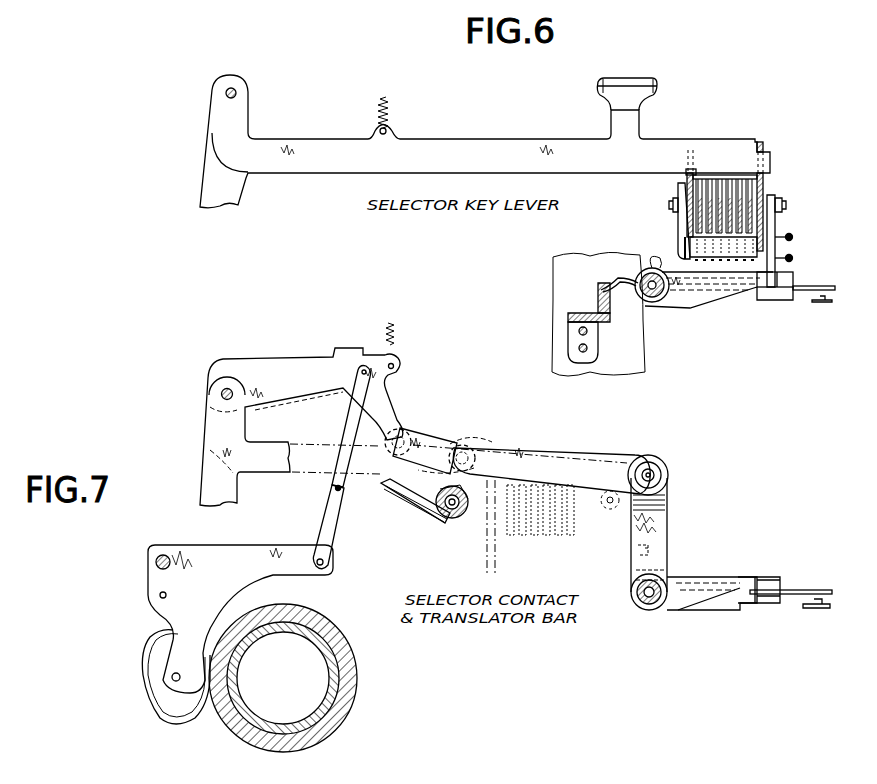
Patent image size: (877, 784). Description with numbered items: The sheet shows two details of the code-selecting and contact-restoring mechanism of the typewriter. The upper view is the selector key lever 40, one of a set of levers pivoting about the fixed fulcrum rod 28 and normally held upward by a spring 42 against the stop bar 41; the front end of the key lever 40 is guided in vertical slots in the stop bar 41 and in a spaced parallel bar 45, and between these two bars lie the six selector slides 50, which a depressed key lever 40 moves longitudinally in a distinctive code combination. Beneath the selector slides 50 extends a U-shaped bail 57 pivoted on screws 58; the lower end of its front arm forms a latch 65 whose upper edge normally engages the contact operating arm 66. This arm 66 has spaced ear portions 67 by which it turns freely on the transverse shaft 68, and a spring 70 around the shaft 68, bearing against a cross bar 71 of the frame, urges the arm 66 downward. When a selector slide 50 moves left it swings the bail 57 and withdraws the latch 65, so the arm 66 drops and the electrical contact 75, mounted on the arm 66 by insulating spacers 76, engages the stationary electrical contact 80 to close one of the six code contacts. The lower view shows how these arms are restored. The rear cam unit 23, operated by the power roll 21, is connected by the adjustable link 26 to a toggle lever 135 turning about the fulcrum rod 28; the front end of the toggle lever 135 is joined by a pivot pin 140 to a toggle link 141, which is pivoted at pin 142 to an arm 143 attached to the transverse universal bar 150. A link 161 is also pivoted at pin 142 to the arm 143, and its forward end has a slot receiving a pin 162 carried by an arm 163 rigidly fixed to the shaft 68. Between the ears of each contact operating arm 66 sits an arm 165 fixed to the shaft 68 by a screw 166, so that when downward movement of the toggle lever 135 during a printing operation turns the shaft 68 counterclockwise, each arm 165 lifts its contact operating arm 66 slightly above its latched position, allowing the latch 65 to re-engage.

In FIG. 7, the power roll 21 is at (312, 618).
In FIG. 7, the rear cam unit 23 is at (180, 543).
In FIG. 7, the adjustable link 26 is at (325, 512).
In FIG. 6, the fulcrum rod 28 is at (232, 88).
In FIG. 7, the fulcrum rod 28 is at (222, 395).
In FIG. 6, the key lever 40 is at (442, 142).
In FIG. 6, the stop bar 41 is at (753, 204).
In FIG. 6, the spring 42 is at (392, 101).
In FIG. 6, the parallel bar 45 is at (687, 181).
In FIG. 6, the selector slide 50 is at (727, 182).
In FIG. 6, the U-shaped bail 57 is at (685, 241).
In FIG. 6, the pivot screw 58 is at (672, 206).
In FIG. 6, the latch 65 is at (794, 280).
In FIG. 6, the contact operating arm 66 is at (792, 257).
In FIG. 7, the contact operating arm 66 is at (765, 577).
In FIG. 6, the ear portion 67 is at (679, 300).
In FIG. 6, the transverse shaft 68 is at (648, 270).
In FIG. 7, the transverse shaft 68 is at (640, 600).
In FIG. 6, the spring 70 is at (601, 285).
In FIG. 6, the cross bar 71 is at (600, 326).
In FIG. 6, the electrical contact 75 is at (828, 286).
In FIG. 7, the electrical contact 75 is at (810, 586).
In FIG. 6, the insulating spacer 76 is at (786, 300).
In FIG. 7, the insulating spacer 76 is at (770, 604).
In FIG. 6, the stationary electrical contact 80 is at (832, 302).
In FIG. 7, the stationary electrical contact 80 is at (828, 609).
In FIG. 7, the toggle lever 135 is at (267, 365).
In FIG. 7, the pivot pin 140 is at (402, 431).
In FIG. 7, the toggle link 141 is at (420, 433).
In FIG. 7, the pivot pin 142 is at (468, 445).
In FIG. 7, the arm 143 is at (395, 501).
In FIG. 7, the universal bar 150 is at (450, 520).
In FIG. 7, the link 161 is at (553, 452).
In FIG. 7, the pin 162 is at (652, 472).
In FIG. 7, the arm 163 is at (667, 509).
In FIG. 7, the arm 165 is at (722, 611).
In FIG. 7, the screw 166 is at (660, 551).